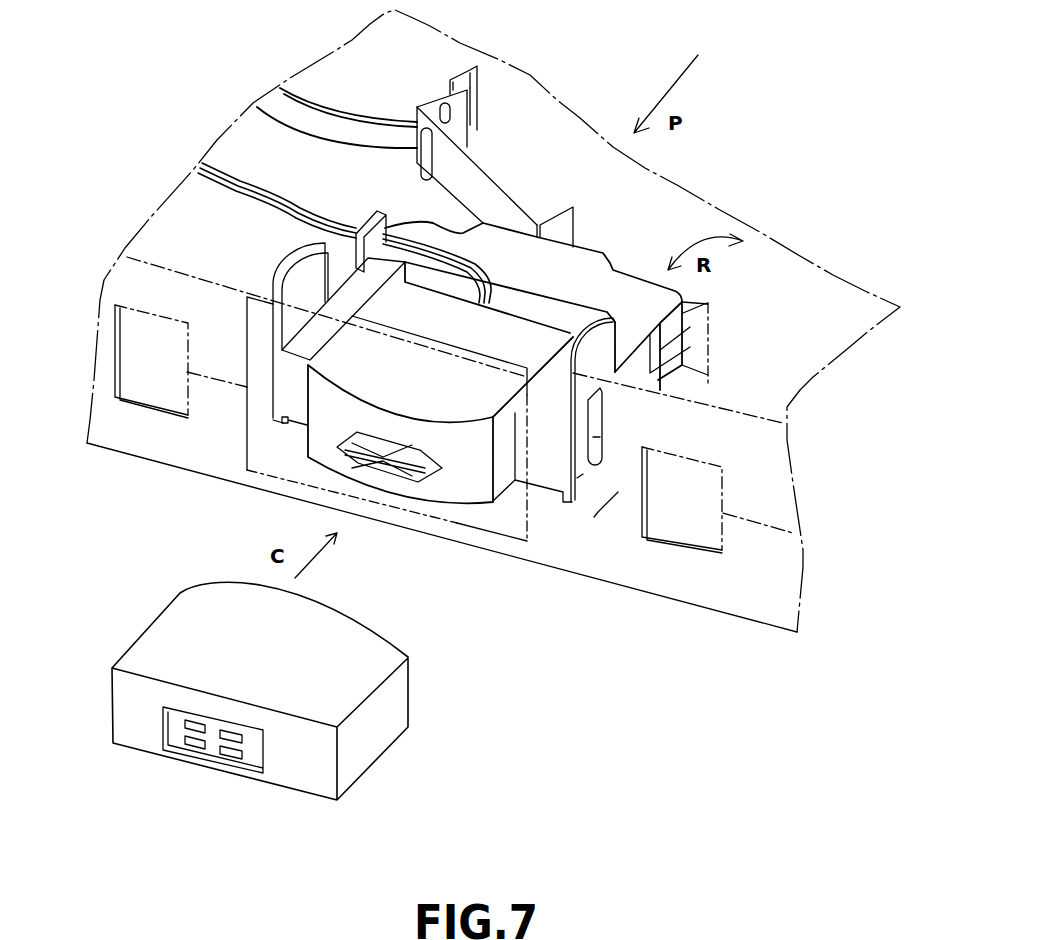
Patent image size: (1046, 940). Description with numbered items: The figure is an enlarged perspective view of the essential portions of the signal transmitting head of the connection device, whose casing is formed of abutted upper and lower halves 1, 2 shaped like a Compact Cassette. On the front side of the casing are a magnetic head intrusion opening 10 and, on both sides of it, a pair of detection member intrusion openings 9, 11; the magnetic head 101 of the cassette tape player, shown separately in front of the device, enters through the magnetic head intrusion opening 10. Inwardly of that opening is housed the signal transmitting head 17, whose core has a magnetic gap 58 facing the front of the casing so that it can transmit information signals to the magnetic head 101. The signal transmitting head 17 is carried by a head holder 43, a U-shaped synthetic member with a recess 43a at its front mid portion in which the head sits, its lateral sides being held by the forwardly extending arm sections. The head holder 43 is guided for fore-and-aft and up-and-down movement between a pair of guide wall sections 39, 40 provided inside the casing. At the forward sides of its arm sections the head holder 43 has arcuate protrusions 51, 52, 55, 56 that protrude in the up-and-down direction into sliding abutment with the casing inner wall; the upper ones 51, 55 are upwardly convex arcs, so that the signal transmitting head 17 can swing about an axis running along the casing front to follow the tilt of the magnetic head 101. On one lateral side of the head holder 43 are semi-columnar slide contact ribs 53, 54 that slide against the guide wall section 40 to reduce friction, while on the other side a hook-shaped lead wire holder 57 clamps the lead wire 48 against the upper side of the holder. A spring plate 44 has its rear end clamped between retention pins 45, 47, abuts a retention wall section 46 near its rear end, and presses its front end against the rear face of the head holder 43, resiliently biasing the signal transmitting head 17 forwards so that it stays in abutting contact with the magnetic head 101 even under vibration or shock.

The upper half 1 is at (107, 267).
The lower half 2 is at (107, 408).
The detection member intrusion opening 9 is at (120, 322).
The magnetic head intrusion opening 10 is at (260, 405).
The detection member intrusion opening 11 is at (647, 510).
The signal transmitting head 17 is at (457, 490).
The guide wall section 39 is at (343, 267).
The guide wall section 40 is at (697, 383).
The head holder 43 is at (590, 267).
The recess 43a is at (533, 310).
The spring plate 44 is at (570, 175).
The retention pin 45 is at (447, 117).
The retention wall section 46 is at (478, 77).
The retention pin 47 is at (422, 170).
The lead wire 48 is at (257, 177).
The arcuate protrusion 51 is at (610, 340).
The arcuate protrusion 52 is at (580, 503).
The slide contact rib 53 is at (653, 353).
The slide contact rib 54 is at (593, 437).
The arcuate protrusion 55 is at (293, 283).
The arcuate protrusion 56 is at (285, 427).
The lead wire holder 57 is at (367, 213).
The magnetic gap 58 is at (383, 470).
The magnetic head 101 is at (395, 720).